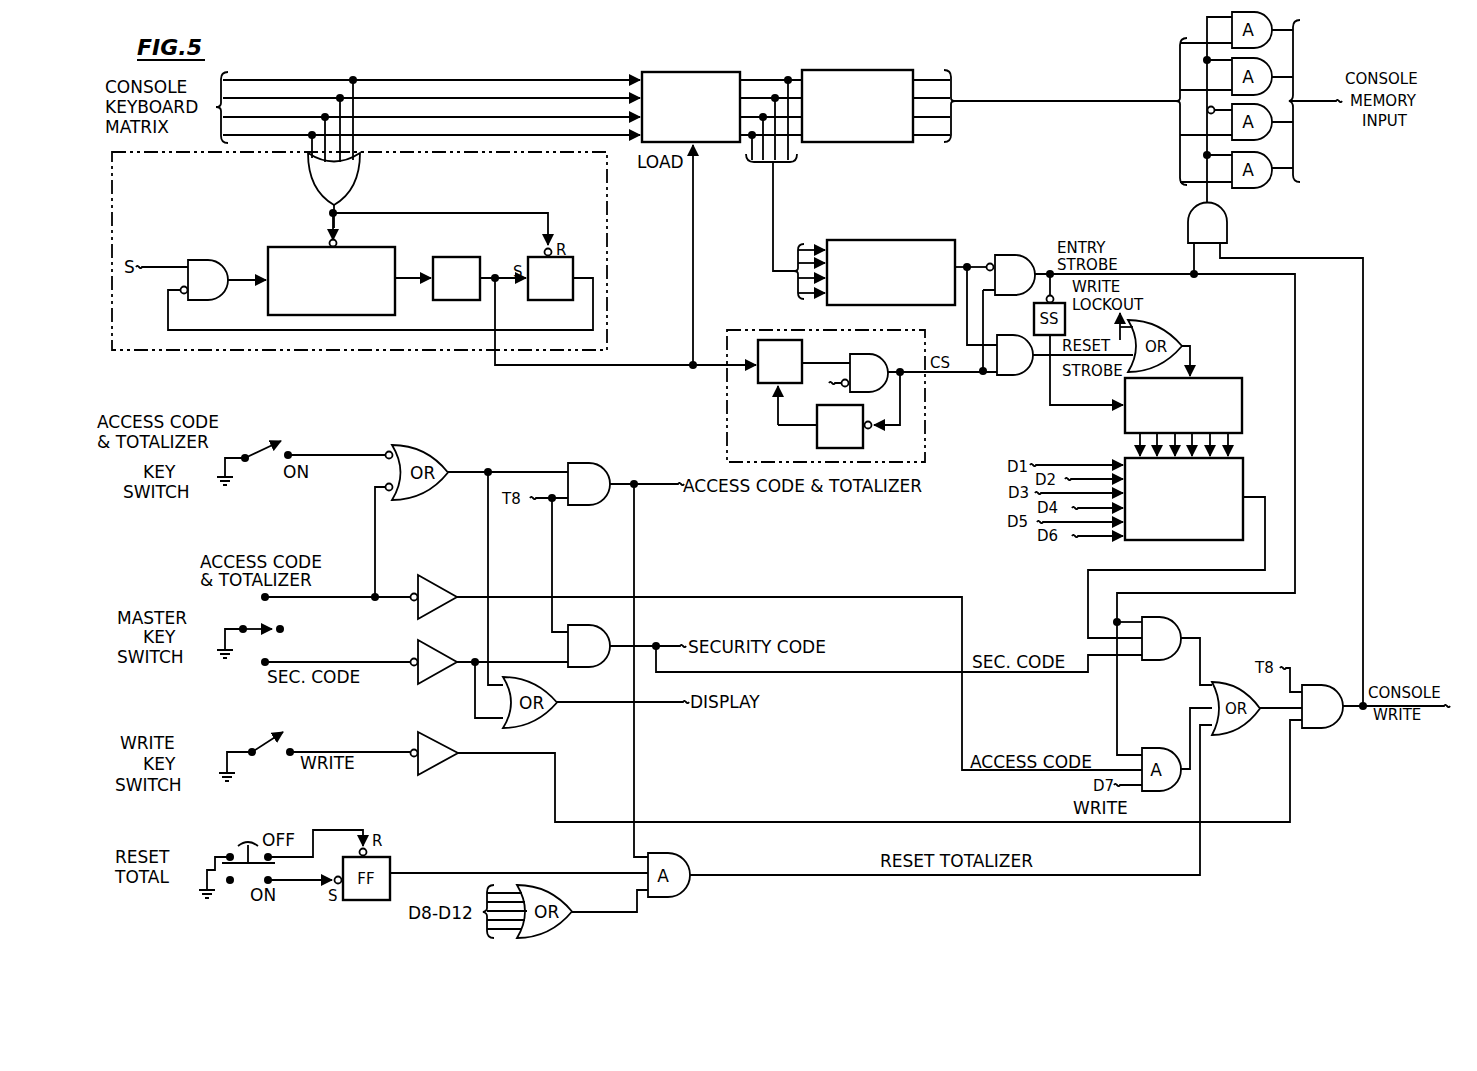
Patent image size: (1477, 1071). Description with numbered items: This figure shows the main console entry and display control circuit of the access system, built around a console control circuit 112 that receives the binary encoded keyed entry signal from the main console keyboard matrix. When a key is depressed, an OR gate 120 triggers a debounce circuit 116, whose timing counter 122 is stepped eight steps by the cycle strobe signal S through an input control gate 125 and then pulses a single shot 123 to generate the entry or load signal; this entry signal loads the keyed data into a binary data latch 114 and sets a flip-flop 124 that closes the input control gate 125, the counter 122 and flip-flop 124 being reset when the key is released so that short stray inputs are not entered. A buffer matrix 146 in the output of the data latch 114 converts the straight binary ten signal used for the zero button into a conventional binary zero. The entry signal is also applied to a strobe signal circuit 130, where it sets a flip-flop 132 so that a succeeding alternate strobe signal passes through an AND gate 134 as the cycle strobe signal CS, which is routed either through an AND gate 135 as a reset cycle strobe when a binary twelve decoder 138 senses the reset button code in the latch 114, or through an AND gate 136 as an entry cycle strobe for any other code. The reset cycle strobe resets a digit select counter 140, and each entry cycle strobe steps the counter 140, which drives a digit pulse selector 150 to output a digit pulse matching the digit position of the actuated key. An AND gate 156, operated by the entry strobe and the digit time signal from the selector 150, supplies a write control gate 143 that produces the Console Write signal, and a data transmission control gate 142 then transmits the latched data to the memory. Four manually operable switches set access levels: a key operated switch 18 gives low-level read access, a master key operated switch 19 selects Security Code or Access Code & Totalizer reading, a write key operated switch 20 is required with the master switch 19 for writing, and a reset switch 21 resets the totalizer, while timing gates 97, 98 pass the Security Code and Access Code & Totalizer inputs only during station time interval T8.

The key operated switch 18 is at (290, 432).
The master key operated switch 19 is at (202, 601).
The write key operated switch 20 is at (245, 727).
The reset switch 21 is at (243, 832).
The timing gate 97 is at (596, 463).
The timing gate 98 is at (580, 625).
The console control circuit 112 is at (478, 78).
The binary data latch 114 is at (703, 72).
The debounce circuit 116 is at (203, 352).
The OR gate 120 is at (308, 175).
The timing counter 122 is at (298, 212).
The single shot 123 is at (448, 257).
The flip-flop 124 is at (530, 257).
The input control gate 125 is at (210, 260).
The strobe signal circuit 130 is at (727, 425).
The flip-flop 132 is at (771, 384).
The AND gate 134 is at (874, 360).
The AND gate 135 is at (1012, 377).
The AND gate 136 is at (1030, 225).
The binary 12 decoder 138 is at (905, 212).
The digit select counter 140 is at (1217, 378).
The data transmission control gate 142 is at (1188, 212).
The write control gate 143 is at (1310, 685).
The buffer matrix 146 is at (870, 45).
The digit pulse selector 150 is at (1242, 460).
The AND gate 156 is at (1172, 617).